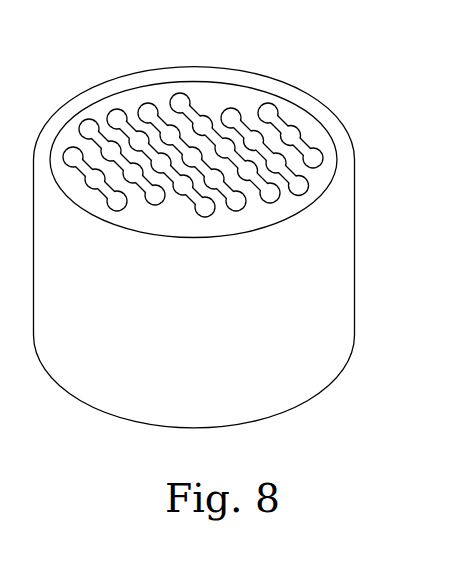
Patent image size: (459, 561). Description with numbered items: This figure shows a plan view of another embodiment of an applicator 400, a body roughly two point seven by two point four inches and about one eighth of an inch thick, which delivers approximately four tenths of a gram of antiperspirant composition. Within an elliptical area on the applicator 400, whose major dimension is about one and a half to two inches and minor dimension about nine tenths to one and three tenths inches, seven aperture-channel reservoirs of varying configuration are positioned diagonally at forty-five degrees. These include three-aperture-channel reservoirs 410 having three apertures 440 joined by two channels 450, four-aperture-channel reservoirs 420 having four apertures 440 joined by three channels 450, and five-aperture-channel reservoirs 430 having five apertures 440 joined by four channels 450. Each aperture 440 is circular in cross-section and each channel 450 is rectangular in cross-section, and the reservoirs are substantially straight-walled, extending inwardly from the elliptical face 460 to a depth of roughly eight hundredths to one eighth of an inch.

The applicator 400 is at (300, 390).
The 3-aperture-channel reservoir 410 is at (268, 112).
The 4-aperture-channel reservoir 420 is at (225, 110).
The 5-aperture-channel reservoir 430 is at (173, 95).
The aperture 440 is at (272, 114).
The channel 450 is at (307, 147).
The top surface 460 is at (295, 214).